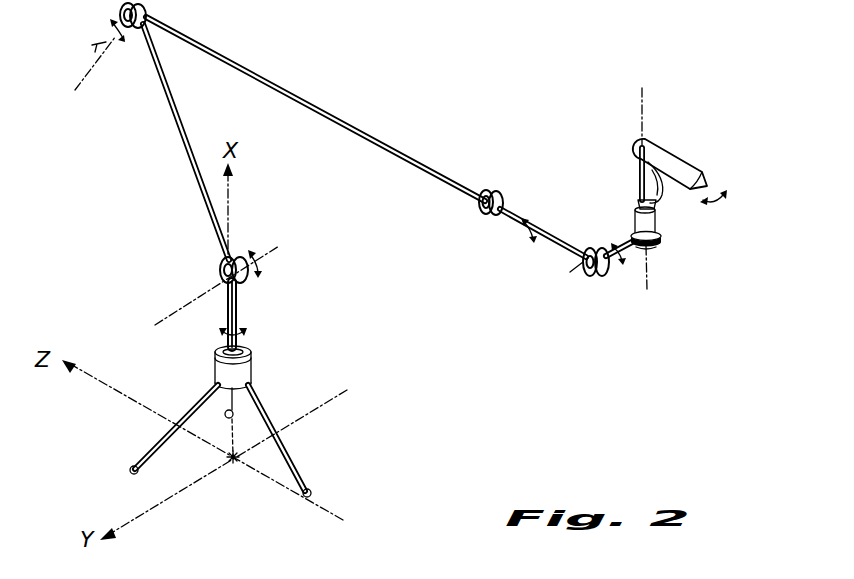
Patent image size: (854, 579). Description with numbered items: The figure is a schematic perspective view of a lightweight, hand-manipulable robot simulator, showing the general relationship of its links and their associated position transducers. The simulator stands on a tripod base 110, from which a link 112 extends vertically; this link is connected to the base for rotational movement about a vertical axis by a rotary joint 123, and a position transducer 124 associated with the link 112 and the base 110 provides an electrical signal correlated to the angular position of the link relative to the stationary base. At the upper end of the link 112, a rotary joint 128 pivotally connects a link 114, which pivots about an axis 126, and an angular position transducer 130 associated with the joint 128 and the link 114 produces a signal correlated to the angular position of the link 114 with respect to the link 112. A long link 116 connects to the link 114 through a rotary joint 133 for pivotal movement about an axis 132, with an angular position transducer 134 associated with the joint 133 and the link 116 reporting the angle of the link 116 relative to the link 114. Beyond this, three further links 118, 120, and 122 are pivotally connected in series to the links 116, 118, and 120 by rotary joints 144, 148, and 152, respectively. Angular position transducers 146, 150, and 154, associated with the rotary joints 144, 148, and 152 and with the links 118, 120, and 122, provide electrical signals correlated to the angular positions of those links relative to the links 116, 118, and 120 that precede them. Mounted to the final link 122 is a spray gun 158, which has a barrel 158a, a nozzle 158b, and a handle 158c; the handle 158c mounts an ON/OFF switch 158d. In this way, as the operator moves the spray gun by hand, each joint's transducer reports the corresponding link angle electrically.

The tripod base 110 is at (260, 388).
The link 112 is at (245, 309).
The link 114 is at (172, 127).
The link 116 is at (338, 106).
The link 118 is at (551, 245).
The link 120 is at (617, 252).
The link 122 is at (660, 232).
The rotary joint 123 is at (252, 352).
The position transducer 124 is at (252, 345).
The axis 126 is at (198, 294).
The rotary joint 128 is at (238, 254).
The angular position transducer 130 is at (221, 271).
The axis 132 is at (87, 79).
The rotary joint 133 is at (146, 14).
The angular position transducer 134 is at (134, 32).
The rotary joint 144 is at (492, 189).
The angular position transducer 146 is at (493, 222).
The rotary joint 148 is at (603, 281).
The angular position transducer 150 is at (600, 281).
The rotary joint 152 is at (664, 241).
The angular position transducer 154 is at (661, 234).
The spray gun 158 is at (681, 146).
The barrel 158a is at (679, 162).
The nozzle 158b is at (712, 181).
The handle 158c is at (636, 152).
The ON/OFF switch 158d is at (640, 199).